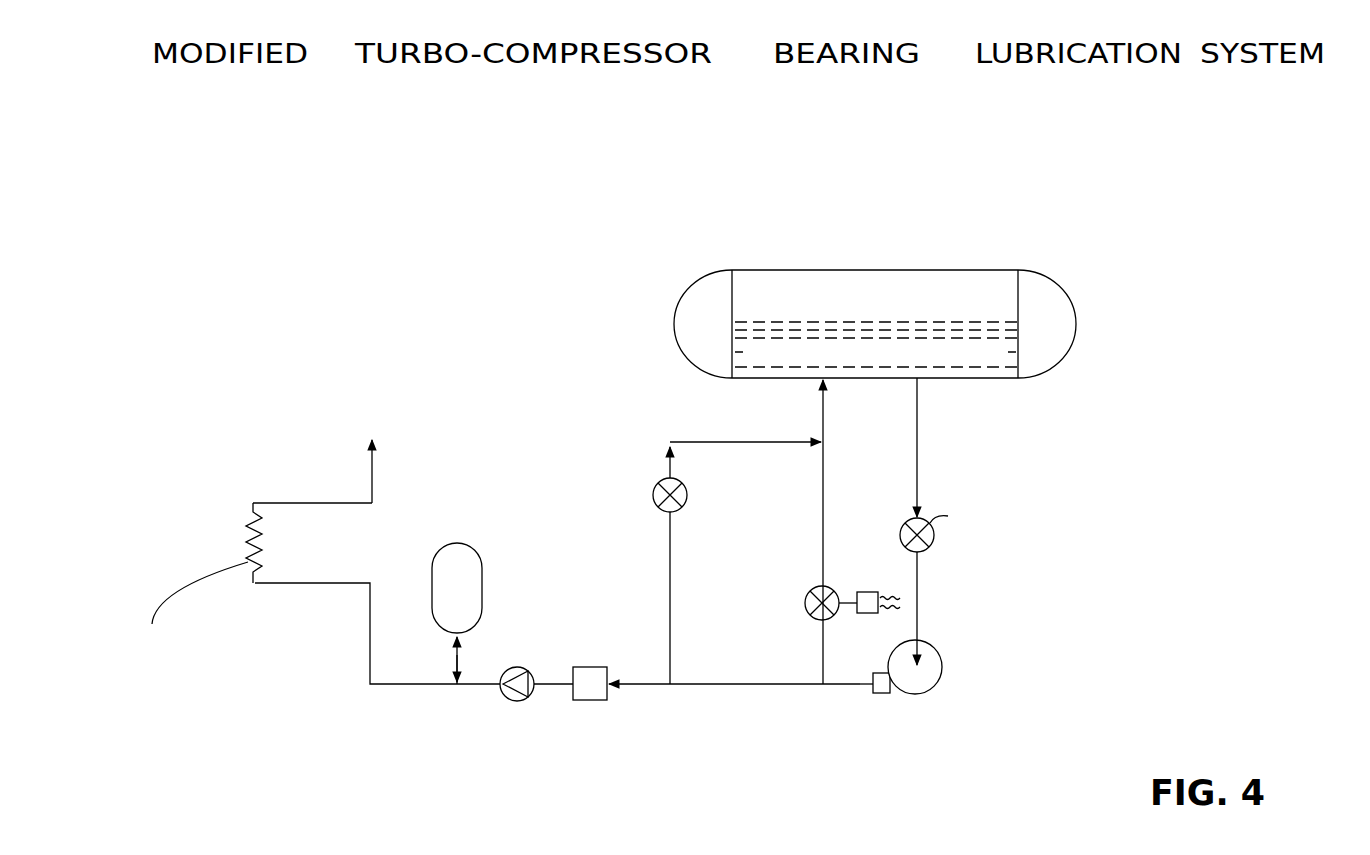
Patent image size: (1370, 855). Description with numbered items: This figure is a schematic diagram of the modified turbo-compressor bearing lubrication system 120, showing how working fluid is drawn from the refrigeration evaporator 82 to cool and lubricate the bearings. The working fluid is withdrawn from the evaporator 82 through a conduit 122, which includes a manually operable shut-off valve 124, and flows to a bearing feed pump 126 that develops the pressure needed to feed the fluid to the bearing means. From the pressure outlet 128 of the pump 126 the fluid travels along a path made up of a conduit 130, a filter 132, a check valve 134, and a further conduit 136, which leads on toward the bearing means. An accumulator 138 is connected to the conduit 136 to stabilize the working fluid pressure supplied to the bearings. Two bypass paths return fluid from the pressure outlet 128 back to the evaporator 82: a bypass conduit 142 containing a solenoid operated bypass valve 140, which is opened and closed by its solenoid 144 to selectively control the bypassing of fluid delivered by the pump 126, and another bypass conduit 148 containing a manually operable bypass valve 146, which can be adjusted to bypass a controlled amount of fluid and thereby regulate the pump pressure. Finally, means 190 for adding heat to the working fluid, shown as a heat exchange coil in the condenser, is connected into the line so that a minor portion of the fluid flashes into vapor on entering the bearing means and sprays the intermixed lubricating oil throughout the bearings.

The modified turbo-compressor bearing lubrication system 120 is at (1063, 214).
The refrigeration evaporator 82 is at (1011, 268).
The conduit 122 is at (918, 442).
The manually operable shut-off valve 124 is at (992, 541).
The pump 126 is at (918, 692).
The pressure outlet 128 is at (877, 692).
The conduit 130 is at (752, 690).
The filter 132 is at (590, 676).
The check valve 134 is at (500, 670).
The further conduit 136 is at (430, 688).
The accumulator 138 is at (462, 612).
The solenoid operated bypass valve 140 is at (815, 622).
The bypass conduit 142 is at (825, 505).
The solenoid 144 is at (881, 556).
The manually operable bypass valve 146 is at (660, 481).
The bypass conduit 148 is at (767, 440).
The means for adding heat 190 is at (248, 530).